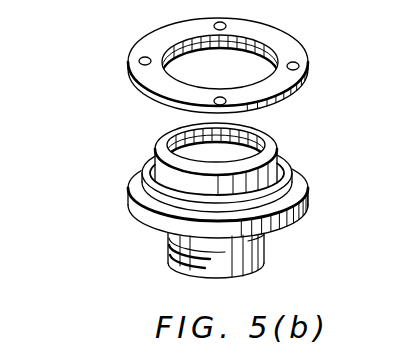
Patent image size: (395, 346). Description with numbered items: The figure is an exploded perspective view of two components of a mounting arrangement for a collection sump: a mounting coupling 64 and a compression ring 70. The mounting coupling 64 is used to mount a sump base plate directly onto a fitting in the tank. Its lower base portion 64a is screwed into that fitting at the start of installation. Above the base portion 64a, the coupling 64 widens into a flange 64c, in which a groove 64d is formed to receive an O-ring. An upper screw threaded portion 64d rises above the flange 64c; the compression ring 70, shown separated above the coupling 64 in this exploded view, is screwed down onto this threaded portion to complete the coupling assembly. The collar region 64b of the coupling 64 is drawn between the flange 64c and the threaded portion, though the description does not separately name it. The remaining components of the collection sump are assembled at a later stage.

The compression ring 70 is at (308, 54).
The mounting coupling 64 is at (184, 198).
The base portion 64a is at (168, 252).
The collar portion 64b is at (141, 174).
The flange 64c is at (128, 200).
The groove / upper screw threaded portion 64d is at (268, 148).